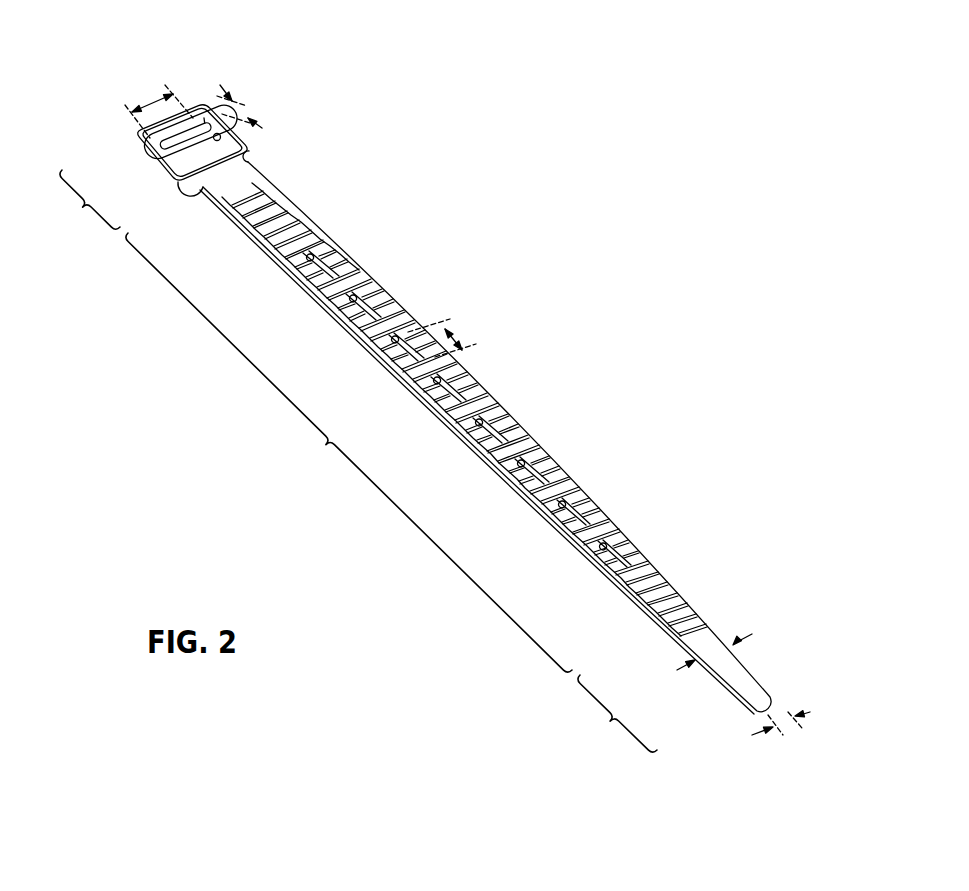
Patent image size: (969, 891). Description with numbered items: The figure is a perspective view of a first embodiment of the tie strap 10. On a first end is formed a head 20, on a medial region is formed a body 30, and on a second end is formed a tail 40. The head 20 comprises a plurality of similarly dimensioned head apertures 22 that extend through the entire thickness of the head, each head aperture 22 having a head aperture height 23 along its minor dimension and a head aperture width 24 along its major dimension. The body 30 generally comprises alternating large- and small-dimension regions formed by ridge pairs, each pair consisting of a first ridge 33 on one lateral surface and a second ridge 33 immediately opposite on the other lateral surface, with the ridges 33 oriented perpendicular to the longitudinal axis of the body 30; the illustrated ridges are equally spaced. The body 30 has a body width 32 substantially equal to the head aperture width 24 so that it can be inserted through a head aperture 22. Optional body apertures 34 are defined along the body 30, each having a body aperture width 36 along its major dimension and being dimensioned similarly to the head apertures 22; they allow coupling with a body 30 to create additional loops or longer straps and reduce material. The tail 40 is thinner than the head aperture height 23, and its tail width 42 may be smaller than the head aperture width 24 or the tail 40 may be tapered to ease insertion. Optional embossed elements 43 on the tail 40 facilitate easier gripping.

The tie strap 10 is at (586, 302).
The head 20 is at (169, 164).
The head aperture 22 is at (190, 156).
The head aperture height 23 is at (263, 128).
The head aperture width 24 is at (152, 96).
The body 30 is at (448, 438).
The body width 32 is at (752, 634).
The ridge 33 is at (555, 487).
The body aperture 34 is at (488, 430).
The body aperture width 36 is at (463, 349).
The tail 40 is at (719, 689).
The tail width 42 is at (805, 713).
The embossed elements 43 is at (723, 665).